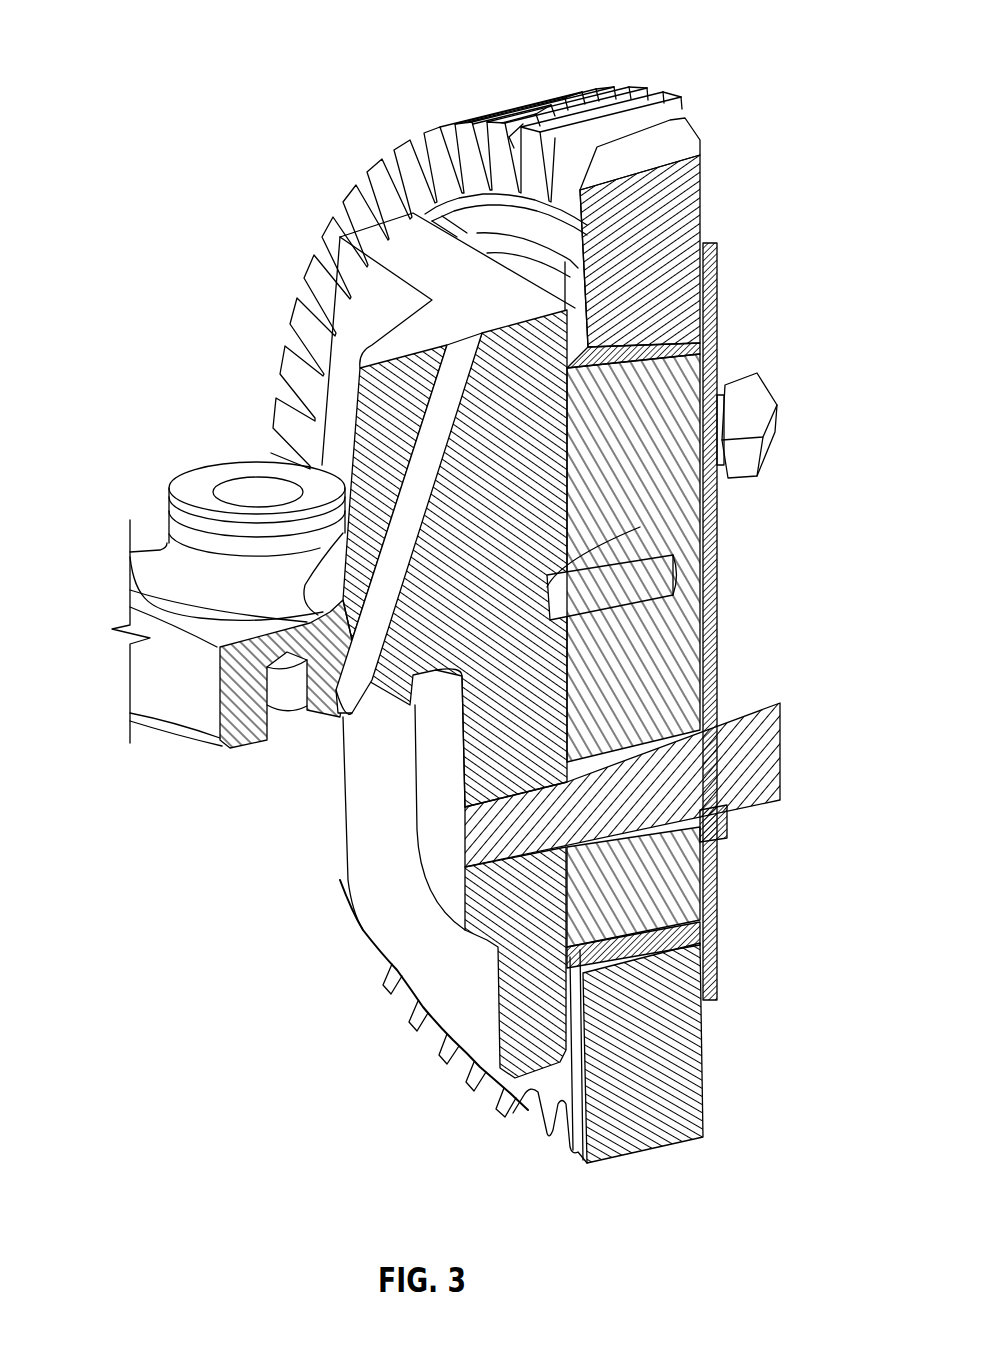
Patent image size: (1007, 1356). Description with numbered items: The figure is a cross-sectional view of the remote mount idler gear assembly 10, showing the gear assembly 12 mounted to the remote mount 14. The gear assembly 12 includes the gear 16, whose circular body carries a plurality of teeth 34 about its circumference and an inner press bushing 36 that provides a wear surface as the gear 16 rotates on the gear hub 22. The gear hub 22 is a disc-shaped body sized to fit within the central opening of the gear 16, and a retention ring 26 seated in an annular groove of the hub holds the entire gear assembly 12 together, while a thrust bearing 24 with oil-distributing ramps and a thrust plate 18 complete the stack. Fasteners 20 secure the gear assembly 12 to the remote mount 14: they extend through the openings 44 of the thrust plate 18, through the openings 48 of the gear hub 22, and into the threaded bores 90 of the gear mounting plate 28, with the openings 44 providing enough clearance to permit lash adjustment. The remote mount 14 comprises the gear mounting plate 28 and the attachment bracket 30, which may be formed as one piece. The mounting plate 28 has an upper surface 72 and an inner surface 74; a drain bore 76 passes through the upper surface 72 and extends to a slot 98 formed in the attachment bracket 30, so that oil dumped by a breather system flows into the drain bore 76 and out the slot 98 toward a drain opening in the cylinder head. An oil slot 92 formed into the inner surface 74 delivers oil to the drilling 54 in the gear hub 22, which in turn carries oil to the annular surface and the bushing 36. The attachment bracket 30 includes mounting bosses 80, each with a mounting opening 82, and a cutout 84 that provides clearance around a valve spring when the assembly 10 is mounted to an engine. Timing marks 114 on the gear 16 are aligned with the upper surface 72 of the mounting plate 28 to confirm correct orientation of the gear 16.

The remote mount idler gear assembly 10 is at (188, 76).
The gear assembly 12 is at (517, 84).
The remote mount 14 is at (142, 434).
The gear 16 is at (486, 131).
The thrust plate 18 is at (714, 1012).
The fasteners 20 is at (776, 400).
The gear hub 22 is at (672, 388).
The thrust bearing 24 is at (564, 272).
The retention ring 26 is at (590, 335).
The gear mounting plate 28 is at (338, 307).
The attachment bracket 30 is at (125, 673).
The teeth 34 is at (513, 1110).
The inner press bushing 36 is at (665, 357).
The openings 44 is at (712, 812).
The openings 48 is at (670, 822).
The drilling 54 is at (640, 573).
The upper surface 72 is at (370, 230).
The inner surface 74 is at (565, 662).
The drain bore 76 is at (487, 282).
The mounting bosses 80 is at (166, 494).
The mounting opening 82 is at (248, 470).
The cutout 84 is at (150, 688).
The threaded bores 90 is at (470, 863).
The oil slot 92 is at (547, 587).
The slot 98 is at (372, 705).
The timing marks 114 is at (450, 230).